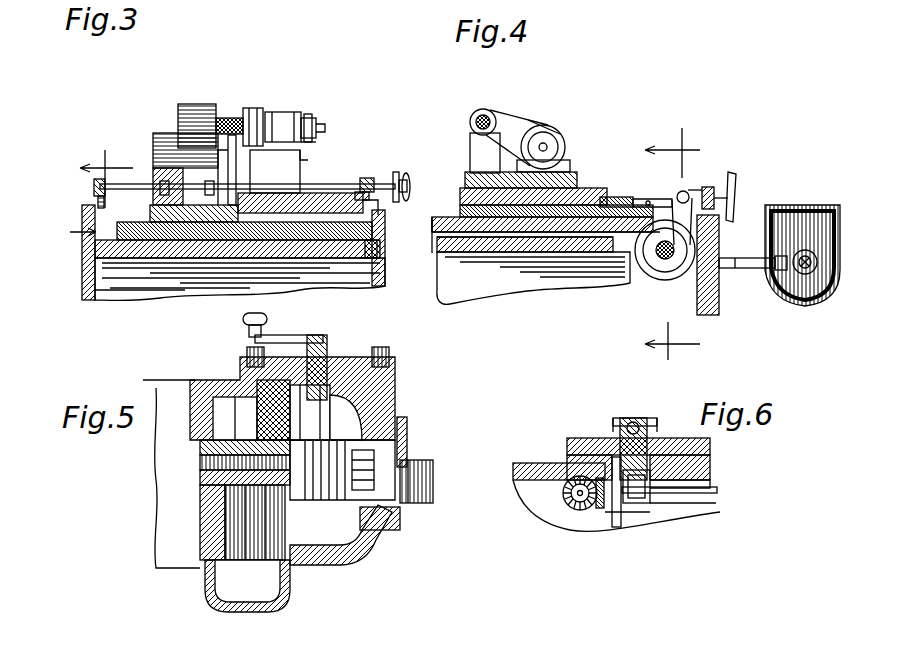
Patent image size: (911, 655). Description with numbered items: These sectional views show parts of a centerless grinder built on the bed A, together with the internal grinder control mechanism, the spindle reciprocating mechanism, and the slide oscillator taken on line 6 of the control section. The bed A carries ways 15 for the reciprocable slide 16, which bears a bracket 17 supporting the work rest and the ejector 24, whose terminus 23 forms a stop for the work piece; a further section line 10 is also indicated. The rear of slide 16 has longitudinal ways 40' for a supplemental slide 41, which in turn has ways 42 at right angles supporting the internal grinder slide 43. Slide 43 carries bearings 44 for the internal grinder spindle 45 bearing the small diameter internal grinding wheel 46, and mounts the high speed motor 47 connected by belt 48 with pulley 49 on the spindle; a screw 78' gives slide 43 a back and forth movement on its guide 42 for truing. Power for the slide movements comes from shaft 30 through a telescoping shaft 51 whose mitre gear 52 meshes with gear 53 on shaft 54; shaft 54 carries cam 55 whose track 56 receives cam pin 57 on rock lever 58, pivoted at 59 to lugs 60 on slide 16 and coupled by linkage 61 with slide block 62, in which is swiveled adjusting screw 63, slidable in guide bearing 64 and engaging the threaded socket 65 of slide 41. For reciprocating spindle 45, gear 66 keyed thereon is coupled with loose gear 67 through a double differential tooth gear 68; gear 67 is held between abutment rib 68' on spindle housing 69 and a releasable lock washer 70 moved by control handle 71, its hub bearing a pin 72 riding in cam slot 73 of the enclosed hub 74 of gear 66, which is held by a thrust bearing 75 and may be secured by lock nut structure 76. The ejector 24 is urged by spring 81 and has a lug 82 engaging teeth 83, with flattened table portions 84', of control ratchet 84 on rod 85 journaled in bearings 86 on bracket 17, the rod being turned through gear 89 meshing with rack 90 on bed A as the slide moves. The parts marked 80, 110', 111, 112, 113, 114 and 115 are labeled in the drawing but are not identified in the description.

In FIG. 3, the bed A is at (85, 265).
In FIG. 4, the bed A is at (470, 290).
In FIG. 6, the bed A is at (545, 463).
In FIG. 4, the section line 6 is at (688, 244).
In FIG. 3, the section line / base 10 is at (89, 190).
In FIG. 3, the ways 15 is at (382, 270).
In FIG. 3, the reciprocable slide 16 is at (376, 245).
In FIG. 6, the reciprocable slide 16 is at (580, 440).
In FIG. 3, the bracket 17 is at (160, 184).
In FIG. 3, the stop forming terminus 23 is at (253, 108).
In FIG. 3, the ejector 24 is at (274, 112).
In FIG. 4, the shaft 30 is at (808, 292).
In FIG. 4, the longitudinal ways 40' is at (445, 211).
In FIG. 4, the supplemental slide 41 is at (466, 202).
In FIG. 4, the ways 42 is at (486, 172).
In FIG. 4, the internal grinder slide 43 is at (480, 140).
In FIG. 4, the bearings 44 is at (541, 125).
In FIG. 5, the internal grinder spindle 45 is at (215, 465).
In FIG. 3, the internal grinding wheel 46 is at (227, 118).
In FIG. 4, the internal grinding wheel 46 is at (490, 113).
In FIG. 4, the high speed motor 47 is at (585, 150).
In FIG. 4, the belt 48 is at (562, 135).
In FIG. 3, the pulley 49 is at (299, 116).
In FIG. 4, the telescoping shaft 51 is at (728, 270).
In FIG. 6, the telescoping shaft 51 is at (576, 506).
In FIG. 6, the bevel or mitre gear 52 is at (600, 502).
In FIG. 6, the gear 53 is at (615, 527).
In FIG. 6, the shaft 54 is at (637, 505).
In FIG. 4, the cam 55 is at (656, 300).
In FIG. 6, the cam 55 is at (656, 516).
In FIG. 4, the cam track 56 is at (714, 312).
In FIG. 6, the cam pin 57 is at (700, 512).
In FIG. 6, the rock lever 58 is at (716, 490).
In FIG. 4, the pivot 59 is at (690, 195).
In FIG. 6, the lugs 60 is at (622, 425).
In FIG. 4, the linkage 61 is at (676, 205).
In FIG. 4, the slide block 62 is at (650, 199).
In FIG. 4, the adjusting screw 63 is at (734, 192).
In FIG. 4, the guide bearing 64 is at (740, 200).
In FIG. 4, the threaded socket 65 is at (610, 198).
In FIG. 5, the gear 66 is at (222, 405).
In FIG. 5, the loose gear 67 is at (244, 400).
In FIG. 5, the double differential tooth gear 68 is at (247, 605).
In FIG. 5, the abutment rib 68' is at (301, 349).
In FIG. 5, the spindle housing 69 is at (192, 380).
In FIG. 5, the releasable lock washer 70 is at (372, 540).
In FIG. 5, the control handle 71 is at (326, 345).
In FIG. 5, the pin or roller 72 is at (215, 480).
In FIG. 5, the cam slot 73 is at (215, 505).
In FIG. 5, the enclosed hub 74 is at (215, 446).
In FIG. 5, the thrust bearing 75 is at (388, 525).
In FIG. 5, the lock nut structure 76 is at (426, 478).
In FIG. 3, the screw 78' is at (384, 157).
In FIG. 3, the motor 80 is at (196, 108).
In FIG. 3, the spring 81 is at (182, 135).
In FIG. 3, the lug 82 is at (236, 200).
In FIG. 3, the teeth 83 is at (200, 200).
In FIG. 3, the control ratchet 84 is at (174, 156).
In FIG. 3, the flattened table portions 84' is at (275, 171).
In FIG. 3, the rod 85 is at (136, 280).
In FIG. 3, the bearings 86 is at (182, 297).
In FIG. 3, the gear 89 is at (100, 185).
In FIG. 3, the rack 90 is at (100, 190).
In FIG. 3, the slide 110' is at (350, 195).
In FIG. 3, the clamp 111 is at (368, 195).
In FIG. 3, the clamp 112 is at (372, 185).
In FIG. 3, the collar 113 is at (304, 160).
In FIG. 3, the collar 114 is at (310, 140).
In FIG. 3, the collar 115 is at (308, 125).